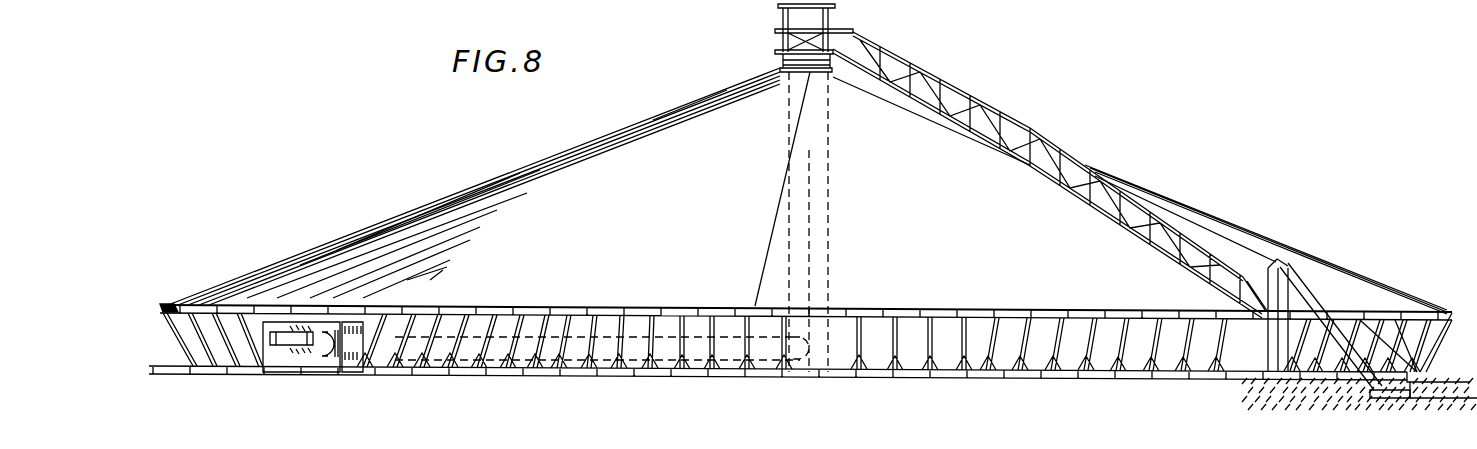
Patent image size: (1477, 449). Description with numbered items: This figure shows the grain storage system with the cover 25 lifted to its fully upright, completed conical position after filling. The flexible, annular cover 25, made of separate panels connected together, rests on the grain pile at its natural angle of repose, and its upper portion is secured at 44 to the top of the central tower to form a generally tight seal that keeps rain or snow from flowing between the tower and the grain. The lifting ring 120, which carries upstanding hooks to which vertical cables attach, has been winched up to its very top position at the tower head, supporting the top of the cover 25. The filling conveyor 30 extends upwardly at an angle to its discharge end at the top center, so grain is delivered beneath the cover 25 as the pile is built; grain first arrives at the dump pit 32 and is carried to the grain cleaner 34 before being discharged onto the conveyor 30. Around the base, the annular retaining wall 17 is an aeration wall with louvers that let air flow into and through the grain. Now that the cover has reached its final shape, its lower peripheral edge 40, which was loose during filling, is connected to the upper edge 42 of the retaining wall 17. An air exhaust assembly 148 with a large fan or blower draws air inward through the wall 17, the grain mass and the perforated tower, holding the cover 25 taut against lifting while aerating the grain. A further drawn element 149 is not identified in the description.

The lifting ring 120 is at (775, 31).
The securing point of cover to tower top 44 is at (781, 68).
The flexible annular cover 25 is at (683, 137).
The filling conveyor 30 is at (1000, 113).
The grain cleaner 34 is at (1277, 263).
The annular retaining ring or wall 17 is at (1452, 312).
The dump pit 32 is at (1437, 390).
The upper edge of the retaining wall 42 is at (160, 307).
The lower peripheral edge of the cover 40 is at (178, 306).
The air exhaust assembly 148 is at (287, 360).
The clamp 149 is at (327, 360).